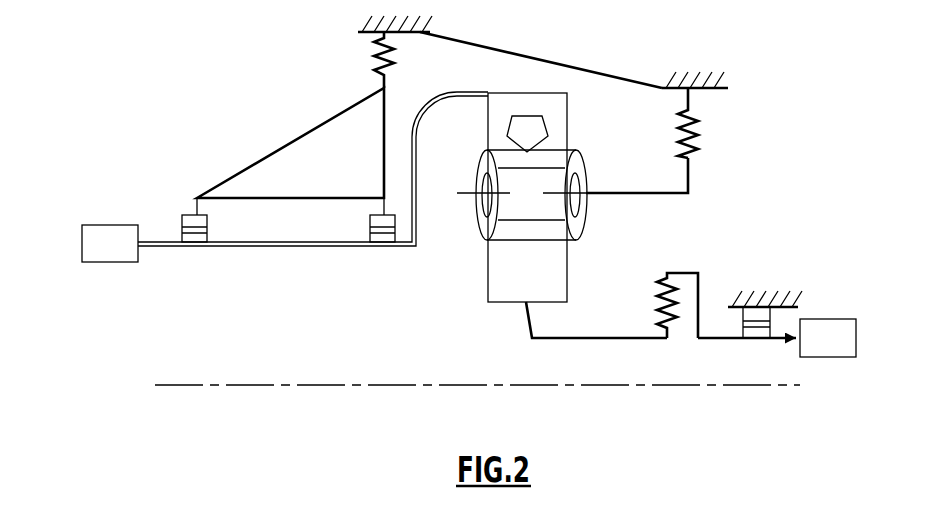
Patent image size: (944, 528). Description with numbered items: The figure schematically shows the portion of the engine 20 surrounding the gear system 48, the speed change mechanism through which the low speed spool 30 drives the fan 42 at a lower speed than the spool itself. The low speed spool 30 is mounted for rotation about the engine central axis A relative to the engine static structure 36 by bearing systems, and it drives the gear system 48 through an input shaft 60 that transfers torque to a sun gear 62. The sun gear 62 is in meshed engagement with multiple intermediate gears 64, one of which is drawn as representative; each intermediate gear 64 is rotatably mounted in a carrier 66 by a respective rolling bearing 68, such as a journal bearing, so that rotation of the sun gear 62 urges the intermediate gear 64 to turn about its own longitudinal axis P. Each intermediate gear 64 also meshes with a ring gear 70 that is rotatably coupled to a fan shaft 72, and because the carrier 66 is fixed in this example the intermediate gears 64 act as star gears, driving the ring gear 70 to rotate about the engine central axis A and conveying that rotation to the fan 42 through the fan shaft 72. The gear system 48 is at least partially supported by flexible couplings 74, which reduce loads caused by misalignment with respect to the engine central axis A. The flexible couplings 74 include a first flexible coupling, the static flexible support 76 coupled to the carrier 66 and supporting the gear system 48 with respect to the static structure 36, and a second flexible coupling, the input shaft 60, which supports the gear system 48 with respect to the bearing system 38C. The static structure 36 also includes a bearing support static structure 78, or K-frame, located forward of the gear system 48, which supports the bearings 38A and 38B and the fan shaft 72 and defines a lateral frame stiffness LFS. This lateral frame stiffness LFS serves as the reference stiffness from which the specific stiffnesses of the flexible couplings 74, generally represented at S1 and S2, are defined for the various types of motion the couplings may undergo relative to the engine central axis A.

The engine 20 is at (137, 340).
The low speed spool 30 is at (841, 350).
The engine static structure 36 is at (648, 67).
The bearing 38A is at (182, 222).
The bearing system 38B is at (370, 222).
The bearing system 38C is at (765, 318).
The fan 42 is at (122, 258).
The gear system 48 is at (466, 244).
The input shaft 60 is at (580, 338).
The sun gear 62 is at (538, 283).
The intermediate gear 64 is at (575, 157).
The carrier 66 is at (591, 172).
The rolling bearing 68 is at (539, 205).
The ring gear 70 is at (560, 125).
The fan shaft 72 is at (345, 247).
The flexible couplings 74 is at (600, 320).
The flexible support 76 is at (676, 193).
The bearing support static structure 78 is at (297, 136).
The lateral frame stiffness LFS is at (377, 57).
The specific stiffness S1 is at (694, 125).
The specific stiffness S2 is at (672, 315).
The longitudinal axis P is at (460, 193).
The engine central axis A is at (377, 387).